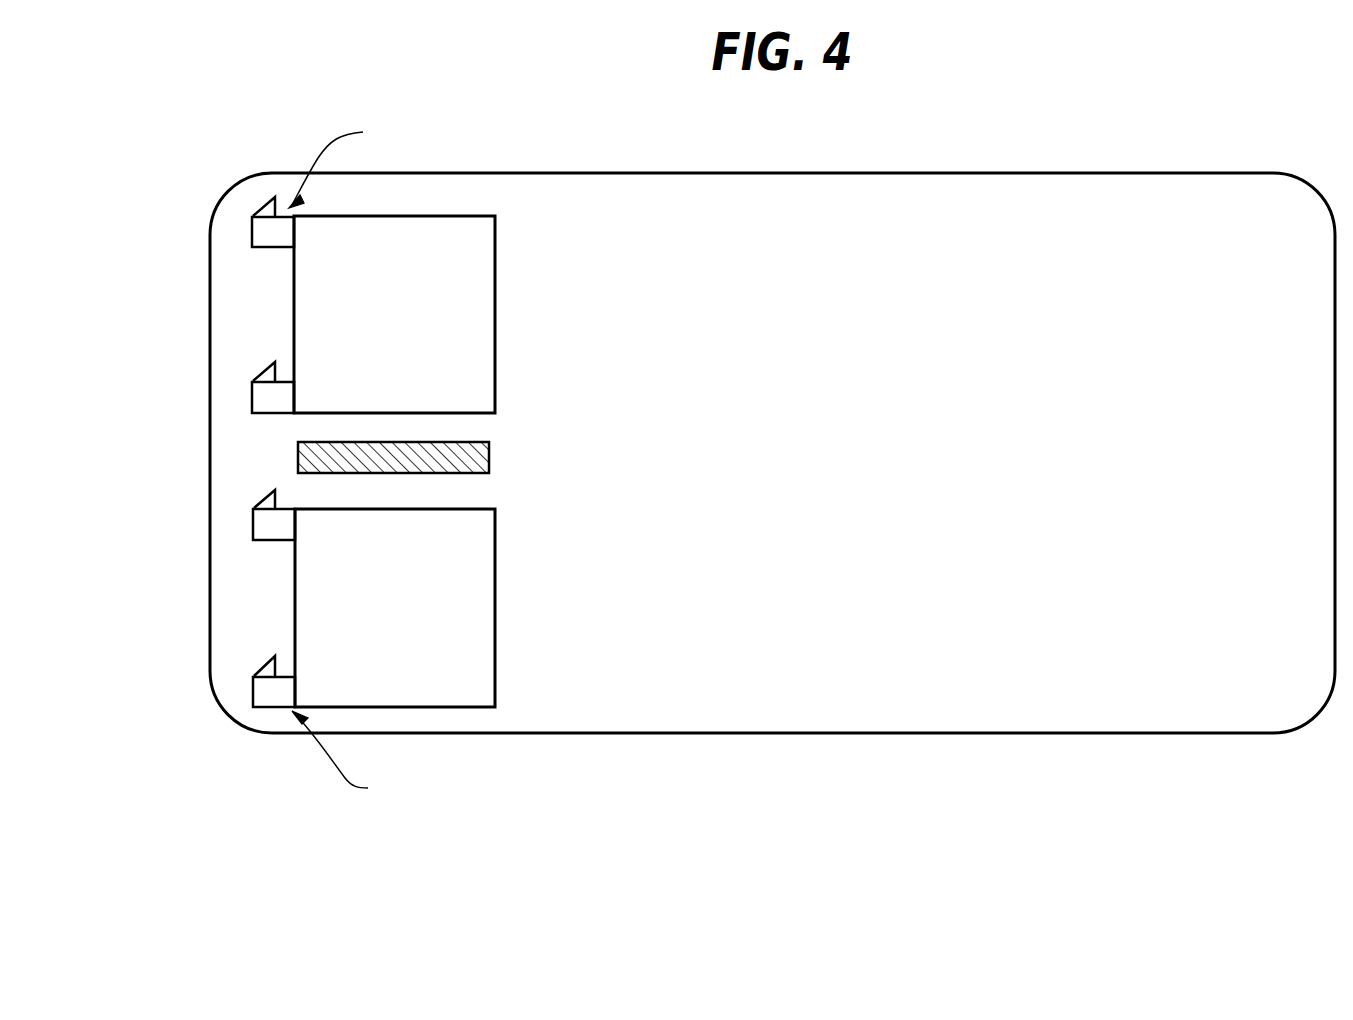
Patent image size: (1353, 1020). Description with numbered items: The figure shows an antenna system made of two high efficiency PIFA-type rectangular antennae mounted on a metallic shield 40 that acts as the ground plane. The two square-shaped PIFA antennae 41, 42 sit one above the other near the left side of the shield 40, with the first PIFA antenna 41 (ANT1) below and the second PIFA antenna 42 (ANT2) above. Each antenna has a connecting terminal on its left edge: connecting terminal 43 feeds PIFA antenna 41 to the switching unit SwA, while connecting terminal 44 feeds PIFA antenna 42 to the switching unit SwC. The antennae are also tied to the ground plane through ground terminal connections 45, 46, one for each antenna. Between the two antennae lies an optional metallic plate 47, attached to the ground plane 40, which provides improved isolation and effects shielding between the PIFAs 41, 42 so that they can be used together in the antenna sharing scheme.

The metallic shield 40 is at (1185, 173).
The PIFA antenna 41 is at (495, 550).
The PIFA antenna 42 is at (495, 337).
The connecting terminal 43 is at (253, 708).
The connecting terminal 44 is at (252, 248).
The ground terminal connection 45 is at (253, 541).
The ground terminal connection 46 is at (252, 414).
The metallic plate 47 is at (489, 460).